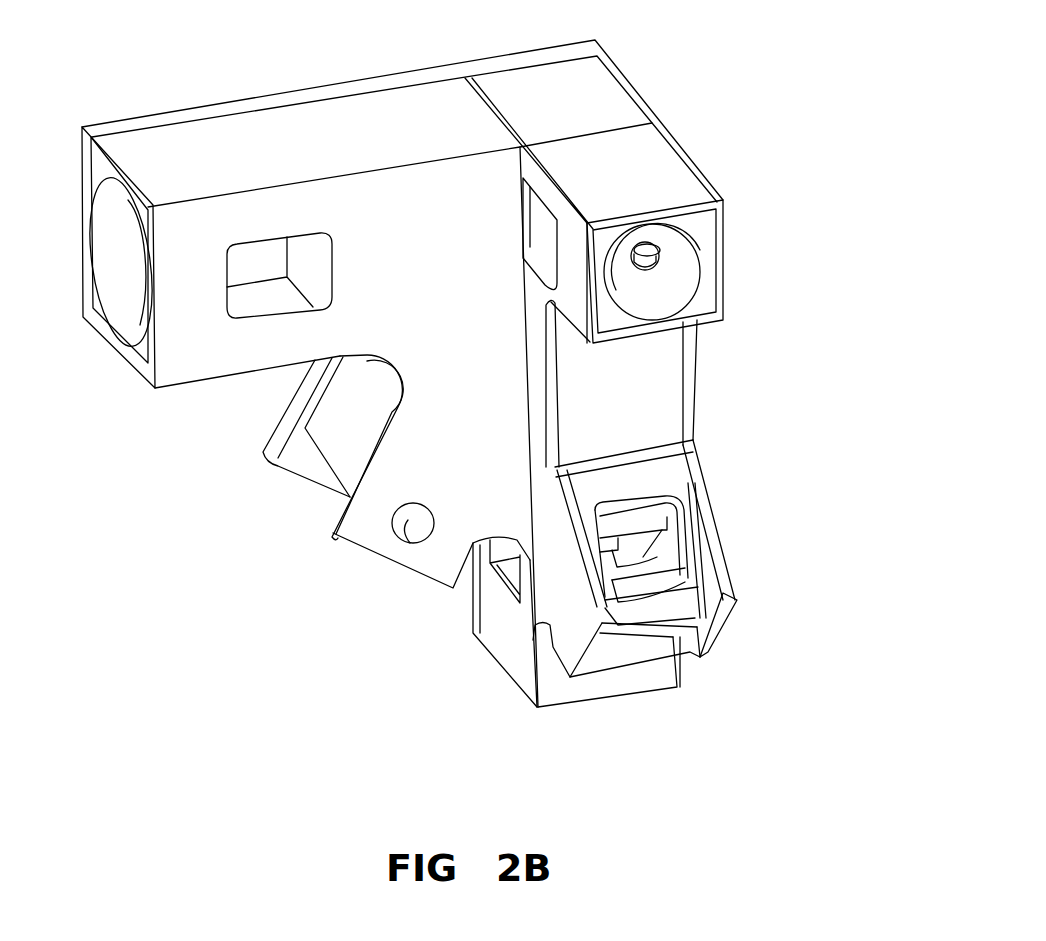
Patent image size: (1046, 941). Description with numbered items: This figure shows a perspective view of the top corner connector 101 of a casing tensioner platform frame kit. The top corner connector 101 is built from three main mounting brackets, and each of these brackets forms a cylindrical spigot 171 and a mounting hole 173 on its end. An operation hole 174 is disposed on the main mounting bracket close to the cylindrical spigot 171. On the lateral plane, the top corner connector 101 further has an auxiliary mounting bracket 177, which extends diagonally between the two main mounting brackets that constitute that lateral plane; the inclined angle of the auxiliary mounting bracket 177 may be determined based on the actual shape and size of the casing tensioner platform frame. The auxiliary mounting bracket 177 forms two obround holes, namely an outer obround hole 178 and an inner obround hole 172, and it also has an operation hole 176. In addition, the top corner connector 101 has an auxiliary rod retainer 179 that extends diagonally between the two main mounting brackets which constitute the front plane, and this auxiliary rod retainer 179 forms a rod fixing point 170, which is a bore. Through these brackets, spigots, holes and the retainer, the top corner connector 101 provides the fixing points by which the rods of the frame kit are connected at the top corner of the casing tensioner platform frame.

The top corner connector 101 is at (401, 373).
The rod fixing point 170 is at (430, 522).
The cylindrical spigot 171 is at (657, 322).
The inner obround hole 172 is at (650, 560).
The mounting hole 173 is at (655, 273).
The operation hole 174 is at (537, 252).
The operation hole 176 is at (683, 498).
The auxiliary mounting bracket 177 is at (730, 609).
The outer obround hole 178 is at (662, 617).
The auxiliary rod retainer 179 is at (373, 524).